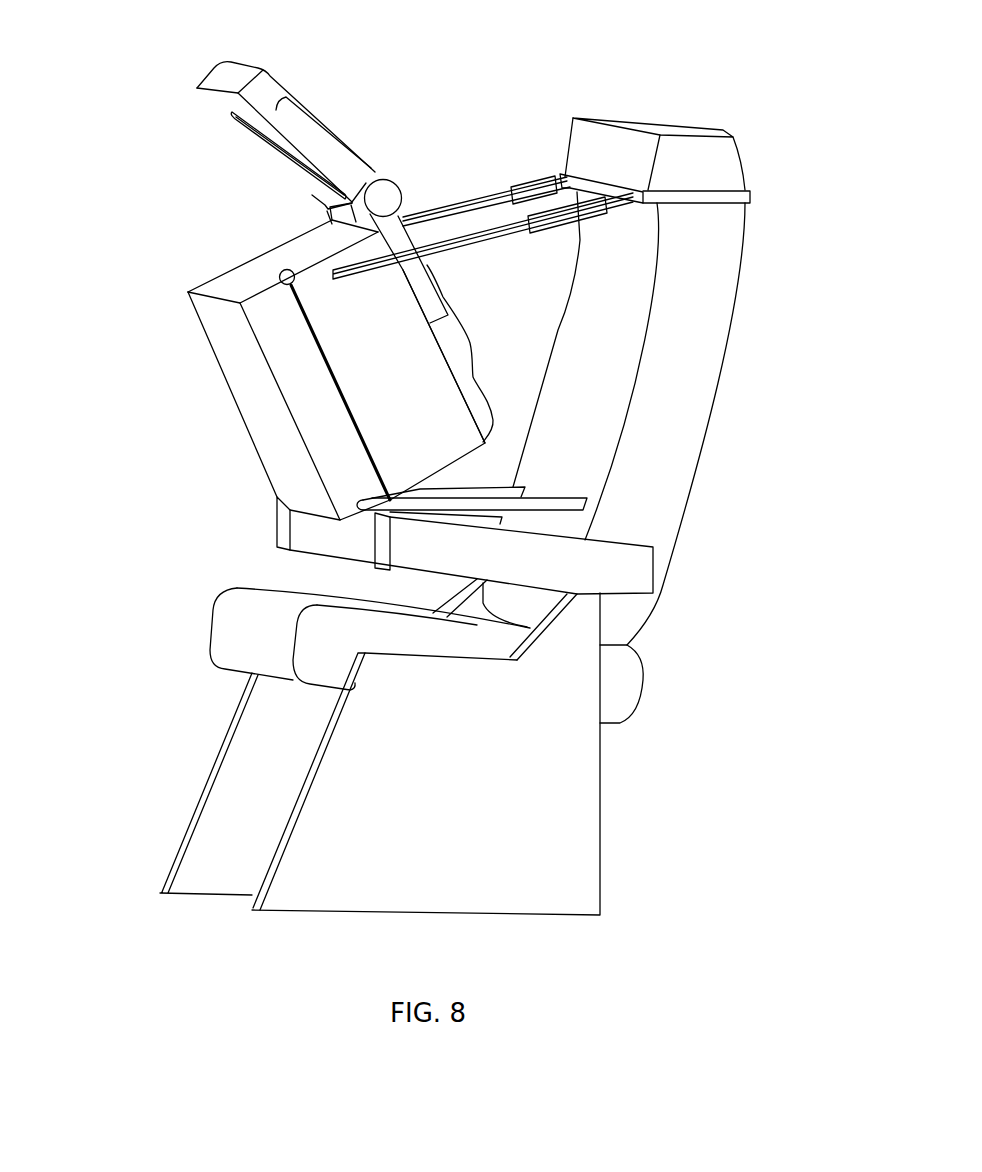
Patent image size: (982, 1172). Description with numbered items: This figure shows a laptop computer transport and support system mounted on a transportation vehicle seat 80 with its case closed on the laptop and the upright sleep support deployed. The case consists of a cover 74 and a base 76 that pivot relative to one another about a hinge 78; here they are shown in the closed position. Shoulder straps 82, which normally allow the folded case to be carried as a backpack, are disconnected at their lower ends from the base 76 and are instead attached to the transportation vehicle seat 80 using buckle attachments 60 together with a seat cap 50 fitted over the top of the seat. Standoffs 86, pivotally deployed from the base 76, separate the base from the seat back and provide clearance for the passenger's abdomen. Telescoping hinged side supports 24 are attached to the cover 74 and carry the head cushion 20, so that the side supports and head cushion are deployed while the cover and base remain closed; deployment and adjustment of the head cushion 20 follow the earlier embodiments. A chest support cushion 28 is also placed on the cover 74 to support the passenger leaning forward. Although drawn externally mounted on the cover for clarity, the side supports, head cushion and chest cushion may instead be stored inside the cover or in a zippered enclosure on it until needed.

The head cushion 20 is at (260, 100).
The telescoping hinged side supports 24 is at (403, 230).
The chest support cushion 28 is at (470, 350).
The seat cap 50 is at (646, 120).
The buckle attachments 60 is at (620, 187).
The cover 74 is at (393, 360).
The base 76 is at (312, 393).
The hinge 78 is at (284, 270).
The transportation vehicle seat 80 is at (680, 380).
The shoulder straps 82 is at (531, 221).
The standoffs 86 is at (543, 502).